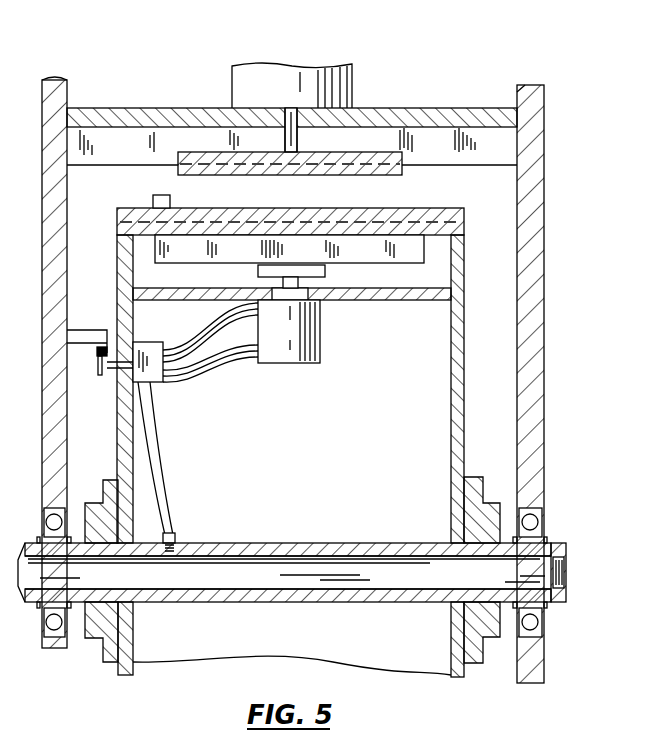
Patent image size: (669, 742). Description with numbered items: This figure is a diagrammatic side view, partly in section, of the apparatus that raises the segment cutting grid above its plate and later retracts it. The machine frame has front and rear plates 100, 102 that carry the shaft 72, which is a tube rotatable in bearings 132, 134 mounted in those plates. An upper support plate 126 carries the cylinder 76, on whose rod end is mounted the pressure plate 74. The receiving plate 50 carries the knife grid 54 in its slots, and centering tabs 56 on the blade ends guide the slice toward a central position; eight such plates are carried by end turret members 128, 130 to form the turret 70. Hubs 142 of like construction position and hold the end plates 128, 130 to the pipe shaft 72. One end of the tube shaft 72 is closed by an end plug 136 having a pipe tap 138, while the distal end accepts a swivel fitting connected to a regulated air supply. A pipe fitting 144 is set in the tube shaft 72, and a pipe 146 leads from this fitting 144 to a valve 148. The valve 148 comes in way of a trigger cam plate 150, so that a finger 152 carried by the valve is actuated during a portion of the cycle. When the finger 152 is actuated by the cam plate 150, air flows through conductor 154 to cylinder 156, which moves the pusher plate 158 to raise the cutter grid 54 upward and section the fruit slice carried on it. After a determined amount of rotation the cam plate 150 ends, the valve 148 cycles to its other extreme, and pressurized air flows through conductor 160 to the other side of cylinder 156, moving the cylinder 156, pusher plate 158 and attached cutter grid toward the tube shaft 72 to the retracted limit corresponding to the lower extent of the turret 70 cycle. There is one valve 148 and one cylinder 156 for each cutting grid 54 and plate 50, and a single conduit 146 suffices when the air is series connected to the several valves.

The receiving plate 50 is at (406, 208).
The knife grid 54 is at (183, 207).
The centering tabs 56 is at (160, 193).
The turret 70 is at (437, 408).
The shaft 72 is at (356, 542).
The pressure plate 74 is at (377, 150).
The cylinder 76 is at (270, 93).
The front plate 100 is at (544, 112).
The rear plate 102 is at (67, 222).
The upper support plate 126 is at (474, 108).
The end turret member 128 is at (133, 654).
The end turret member 130 is at (451, 643).
The bearing 132 is at (67, 640).
The bearing 134 is at (546, 503).
The end plug 136 is at (567, 558).
The pipe tap 138 is at (567, 575).
The hubs 142 is at (107, 487).
The pipe fitting 144 is at (177, 537).
The pipe 146 is at (160, 452).
The valve 148 is at (157, 382).
The trigger cam plate 150 is at (83, 330).
The finger 152 is at (97, 362).
The conductor 154 is at (230, 364).
The cylinder 156 is at (320, 363).
The pusher plate 158 is at (327, 277).
The conductor 160 is at (212, 323).